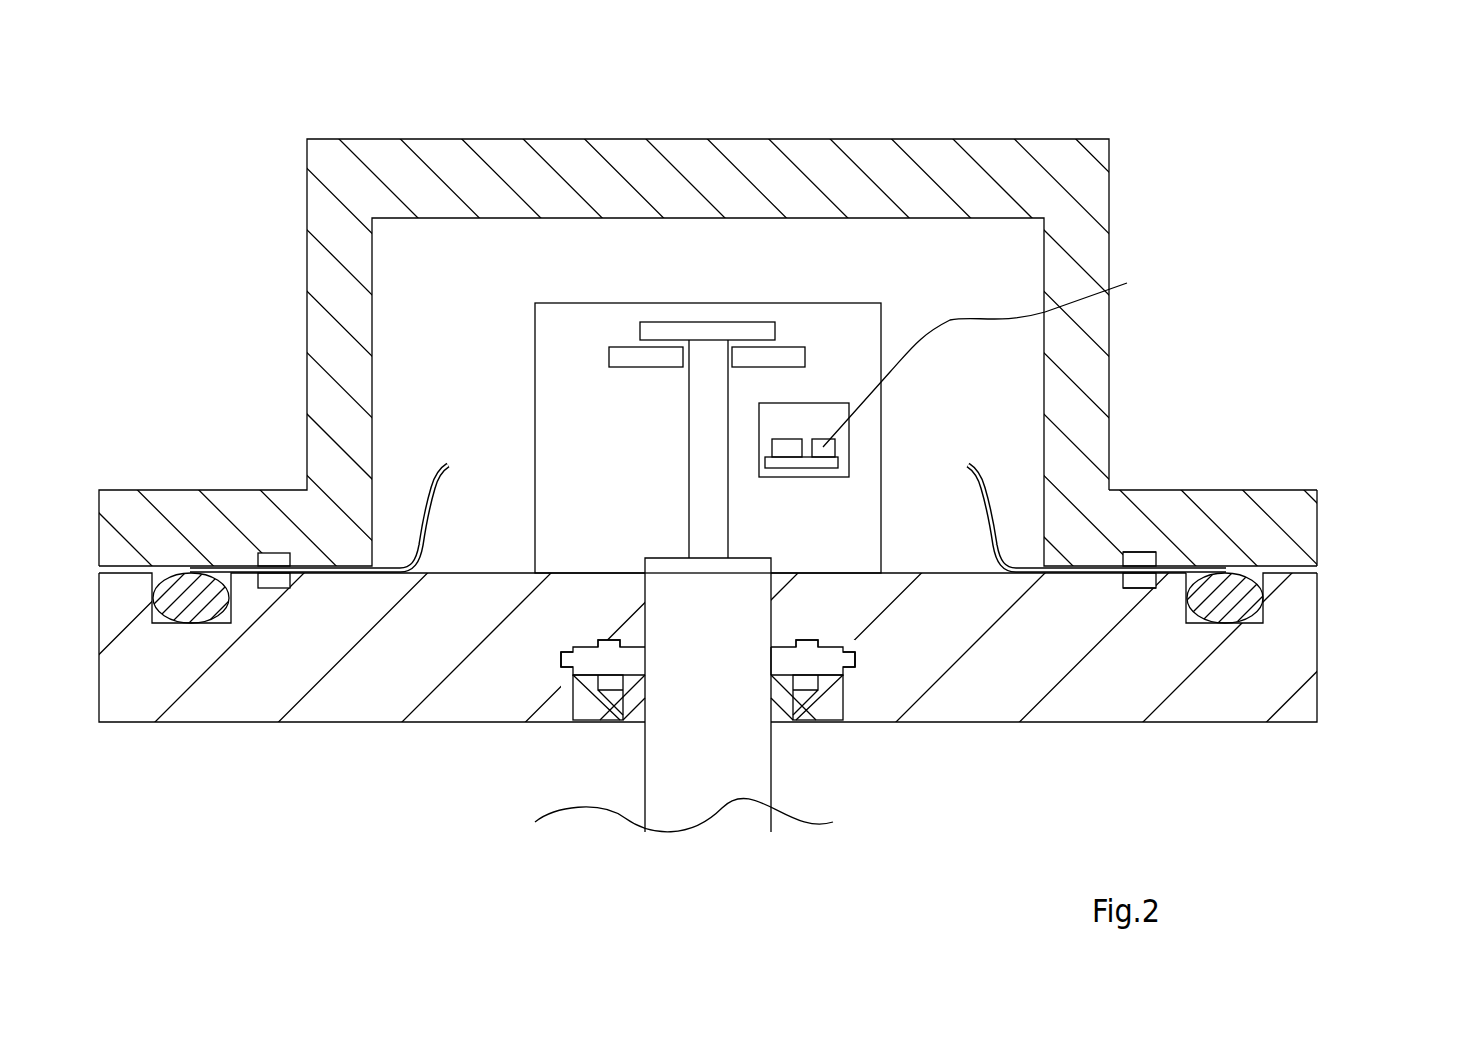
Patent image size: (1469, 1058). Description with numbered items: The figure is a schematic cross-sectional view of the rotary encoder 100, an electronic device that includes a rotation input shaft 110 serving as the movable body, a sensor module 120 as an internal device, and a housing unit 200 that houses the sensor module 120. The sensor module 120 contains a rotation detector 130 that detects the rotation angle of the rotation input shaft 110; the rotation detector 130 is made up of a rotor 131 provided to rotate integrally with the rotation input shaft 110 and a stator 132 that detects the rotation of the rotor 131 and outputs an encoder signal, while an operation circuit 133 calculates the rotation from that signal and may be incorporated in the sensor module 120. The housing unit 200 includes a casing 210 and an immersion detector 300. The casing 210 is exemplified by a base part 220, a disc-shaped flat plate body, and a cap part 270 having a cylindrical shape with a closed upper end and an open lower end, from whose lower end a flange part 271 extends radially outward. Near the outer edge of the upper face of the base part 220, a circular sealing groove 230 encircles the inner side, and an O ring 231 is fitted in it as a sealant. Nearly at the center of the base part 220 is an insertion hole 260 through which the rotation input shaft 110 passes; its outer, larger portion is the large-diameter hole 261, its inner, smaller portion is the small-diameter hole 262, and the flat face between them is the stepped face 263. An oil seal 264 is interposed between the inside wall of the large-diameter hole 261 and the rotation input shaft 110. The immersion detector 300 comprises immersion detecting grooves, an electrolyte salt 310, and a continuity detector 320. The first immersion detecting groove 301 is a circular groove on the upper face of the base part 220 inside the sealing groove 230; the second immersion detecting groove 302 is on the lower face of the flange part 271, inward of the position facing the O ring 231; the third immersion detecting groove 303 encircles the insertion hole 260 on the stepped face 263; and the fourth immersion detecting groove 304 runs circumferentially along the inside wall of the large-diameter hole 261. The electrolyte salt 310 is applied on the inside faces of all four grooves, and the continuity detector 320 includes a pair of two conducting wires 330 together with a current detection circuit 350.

The rotary encoder 100 is at (1132, 200).
The rotation input shaft 110 is at (771, 785).
The sensor module 120 is at (852, 316).
The rotation detector 130 is at (607, 346).
The rotor 131 is at (757, 328).
The stator 132 is at (620, 328).
The operation circuit 133 is at (785, 447).
The housing unit 200 is at (277, 228).
The casing 210 is at (1127, 443).
The base part 220 is at (1307, 613).
The sealing groove 230 is at (1267, 620).
The O ring 231 is at (1215, 608).
The insertion hole 260 is at (550, 793).
The large-diameter hole 261 is at (838, 693).
The small-diameter hole 262 is at (755, 593).
The stepped face 263 is at (860, 657).
The oil seal 264 is at (807, 700).
The cap part 270 is at (1288, 510).
The flange part 271 is at (1307, 538).
The immersion detector 300 is at (423, 452).
The first immersion detecting groove 301 is at (1146, 590).
The second immersion detecting groove 302 is at (1150, 552).
The third immersion detecting groove 303 is at (637, 640).
The fourth immersion detecting groove 304 is at (572, 690).
The electrolyte salt 310 is at (272, 552).
The continuity detector 320 is at (712, 418).
The conducting wires 330 is at (408, 510).
The current detection circuit 350 is at (1025, 356).